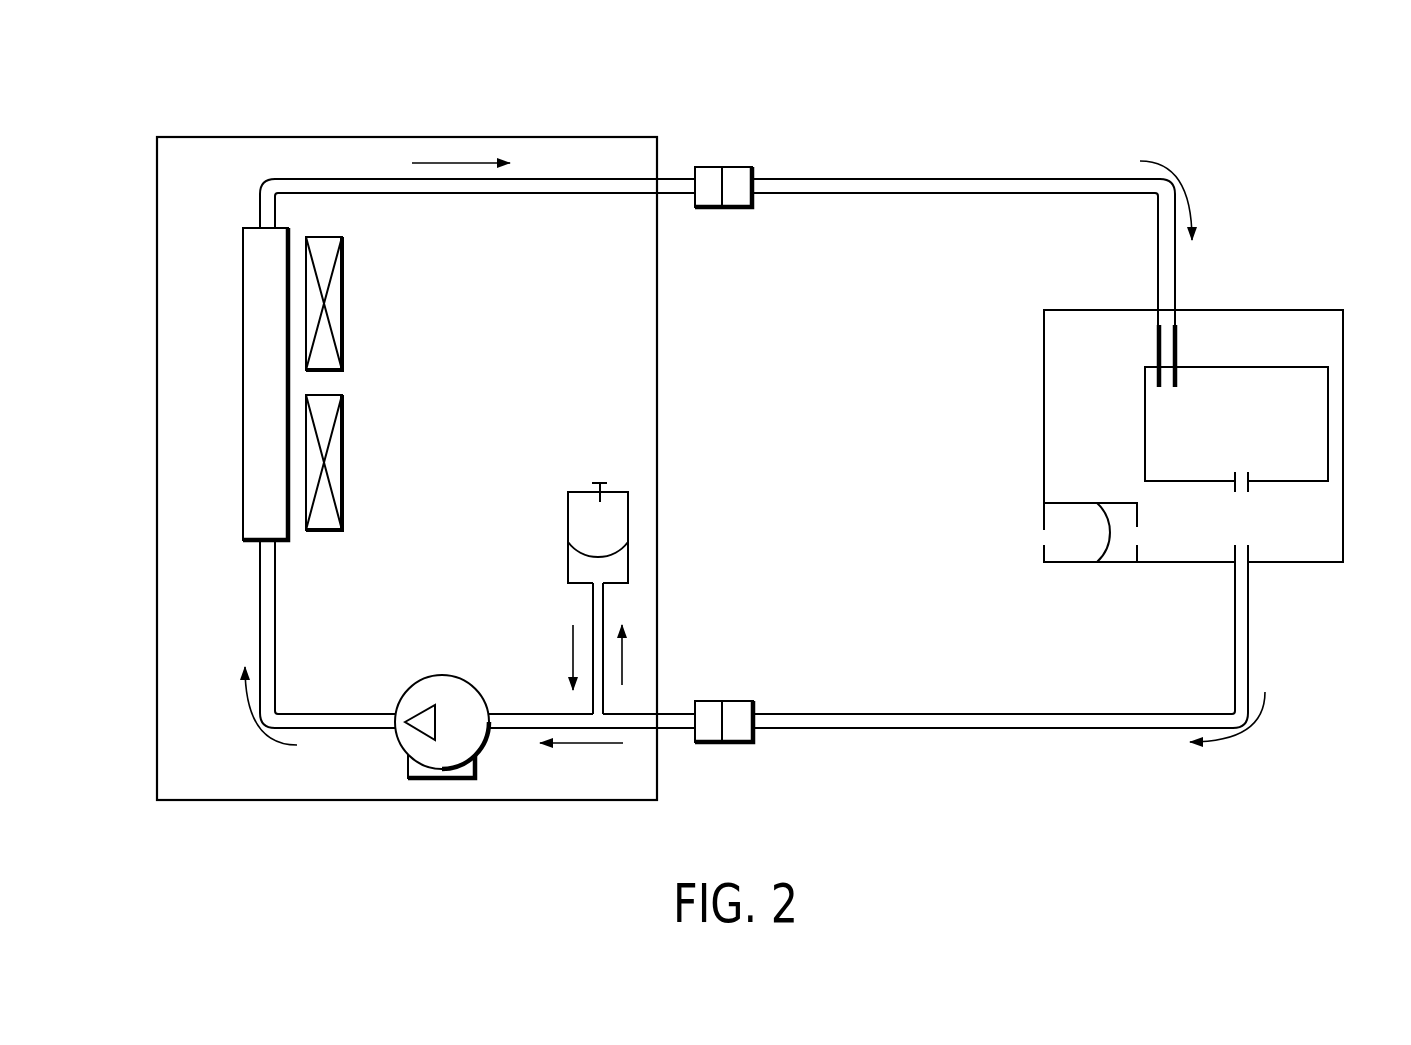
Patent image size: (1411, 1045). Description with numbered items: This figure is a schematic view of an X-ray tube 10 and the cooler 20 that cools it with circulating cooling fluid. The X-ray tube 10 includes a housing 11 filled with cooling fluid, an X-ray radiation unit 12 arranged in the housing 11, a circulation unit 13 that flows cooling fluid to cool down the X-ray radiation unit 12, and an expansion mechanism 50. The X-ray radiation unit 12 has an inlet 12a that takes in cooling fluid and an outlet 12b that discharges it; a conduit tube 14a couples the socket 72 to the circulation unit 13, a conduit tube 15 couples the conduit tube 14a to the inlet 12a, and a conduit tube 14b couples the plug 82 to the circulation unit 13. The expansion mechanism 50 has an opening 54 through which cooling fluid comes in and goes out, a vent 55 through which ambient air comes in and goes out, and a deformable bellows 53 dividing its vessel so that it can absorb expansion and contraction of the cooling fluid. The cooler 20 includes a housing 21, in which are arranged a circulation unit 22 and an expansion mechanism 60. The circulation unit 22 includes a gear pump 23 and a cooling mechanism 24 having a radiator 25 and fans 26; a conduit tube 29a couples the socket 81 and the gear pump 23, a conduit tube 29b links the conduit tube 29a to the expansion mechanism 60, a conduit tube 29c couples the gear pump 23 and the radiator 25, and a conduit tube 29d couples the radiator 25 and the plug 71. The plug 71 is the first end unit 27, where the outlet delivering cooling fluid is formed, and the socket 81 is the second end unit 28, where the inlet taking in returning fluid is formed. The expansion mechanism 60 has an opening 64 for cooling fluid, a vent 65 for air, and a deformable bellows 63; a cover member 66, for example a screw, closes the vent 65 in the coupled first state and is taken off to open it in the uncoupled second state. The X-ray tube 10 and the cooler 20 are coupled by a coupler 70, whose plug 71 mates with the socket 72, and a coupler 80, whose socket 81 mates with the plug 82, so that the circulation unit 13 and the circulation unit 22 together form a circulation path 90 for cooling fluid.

The X-ray tube 10 is at (1181, 444).
The housing 11 is at (1343, 330).
The X-ray radiation unit 12 is at (1270, 411).
The inlet 12a is at (1173, 392).
The outlet 12b is at (1243, 470).
The circulation unit 13 is at (1330, 527).
The conduit tube 14a is at (979, 178).
The conduit tube 14b is at (975, 730).
The conduit tube 15 is at (1178, 343).
The cooler 20 is at (392, 125).
The housing 21 is at (659, 383).
The circulation unit 22 is at (368, 737).
The gear pump 23 is at (445, 780).
The cooling mechanism 24 is at (344, 384).
The radiator 25 is at (293, 380).
The fans 26 is at (342, 352).
The first end unit 27 is at (706, 167).
The second end unit 28 is at (710, 745).
The conduit tube 29a is at (518, 724).
The conduit tube 29b is at (592, 612).
The conduit tube 29c is at (276, 590).
The conduit tube 29d is at (598, 194).
The expansion mechanism 50 is at (1091, 555).
The bellows 53 is at (1105, 517).
The opening 54 is at (1147, 535).
The vent 55 is at (1035, 532).
The expansion mechanism 60 is at (604, 509).
The bellows 63 is at (618, 548).
The opening 64 is at (592, 576).
The vent 65 is at (585, 504).
The cover member 66 is at (599, 480).
The coupler 70 is at (724, 212).
The plug 71 is at (710, 209).
The socket 72 is at (731, 219).
The coupler 80 is at (724, 696).
The socket 81 is at (712, 700).
The plug 82 is at (737, 700).
The circulation path 90 is at (866, 170).